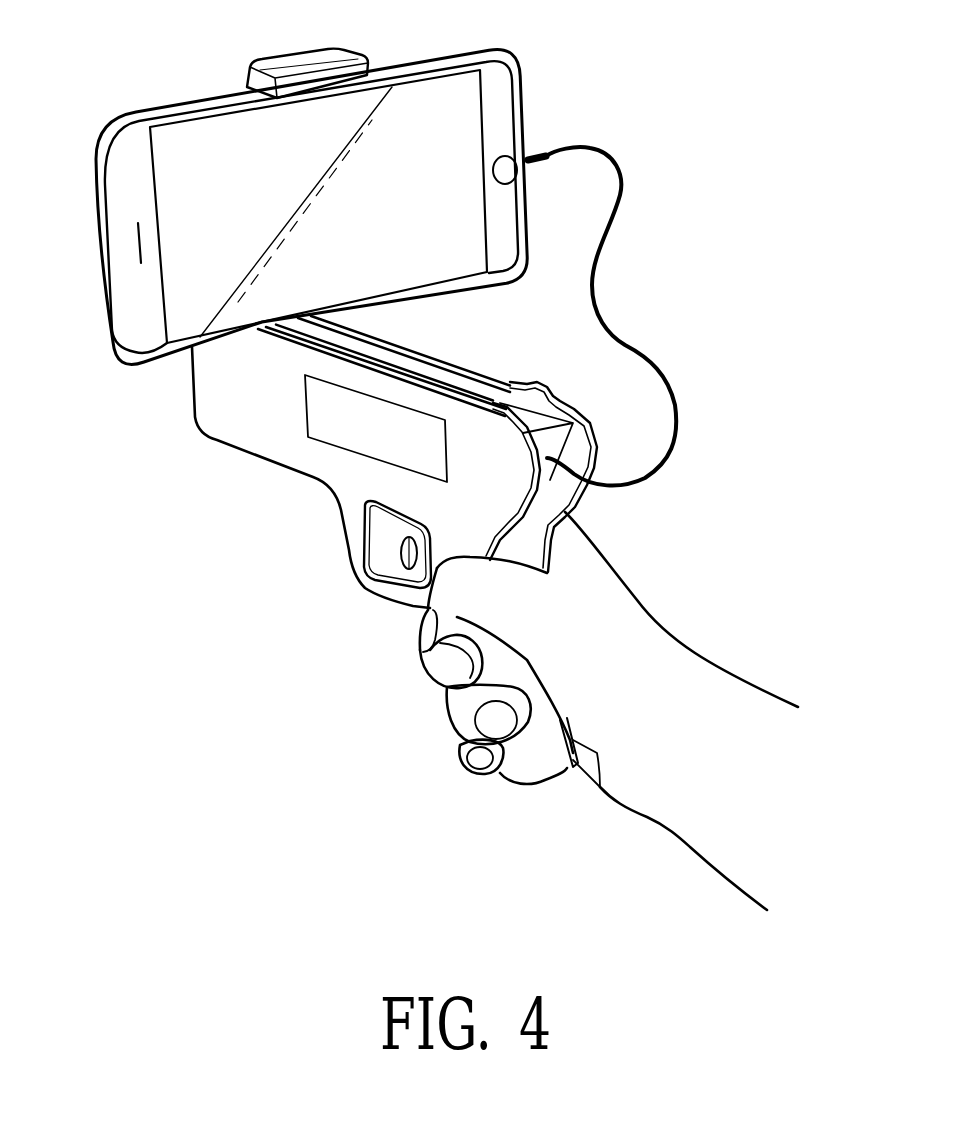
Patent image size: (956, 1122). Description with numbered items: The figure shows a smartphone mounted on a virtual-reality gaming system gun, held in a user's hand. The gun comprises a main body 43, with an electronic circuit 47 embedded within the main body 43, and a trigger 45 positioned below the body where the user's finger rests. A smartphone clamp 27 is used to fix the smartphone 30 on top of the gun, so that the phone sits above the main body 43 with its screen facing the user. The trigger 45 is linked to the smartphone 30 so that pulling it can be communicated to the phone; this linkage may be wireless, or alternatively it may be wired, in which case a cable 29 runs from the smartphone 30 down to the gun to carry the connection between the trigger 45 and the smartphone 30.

The smartphone clamp 27 is at (300, 56).
The smartphone 30 is at (467, 50).
The cable 29 is at (640, 343).
The main body 43 is at (452, 363).
The electronic circuit 47 is at (306, 416).
The trigger 45 is at (413, 552).